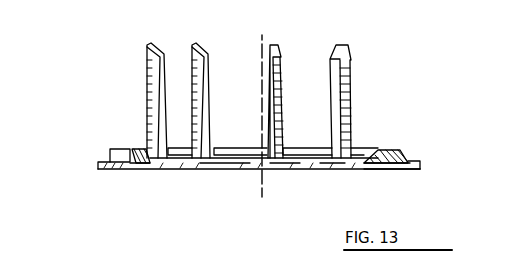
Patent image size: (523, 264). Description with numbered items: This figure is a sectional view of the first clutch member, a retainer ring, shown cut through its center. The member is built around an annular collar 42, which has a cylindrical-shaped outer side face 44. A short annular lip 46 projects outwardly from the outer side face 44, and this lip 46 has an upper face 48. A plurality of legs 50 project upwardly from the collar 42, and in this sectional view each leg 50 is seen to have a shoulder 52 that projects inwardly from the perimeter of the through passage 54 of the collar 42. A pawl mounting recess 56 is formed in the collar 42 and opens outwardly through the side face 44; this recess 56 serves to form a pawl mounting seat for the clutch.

The annular collar 42 is at (141, 170).
The outer side face 44 is at (404, 150).
The annular lip 46 is at (410, 170).
The upper face 48 is at (414, 162).
The leg 50 is at (146, 99).
The shoulder 52 is at (205, 56).
The through passage 54 is at (229, 160).
The pawl mounting recess 56 is at (122, 153).